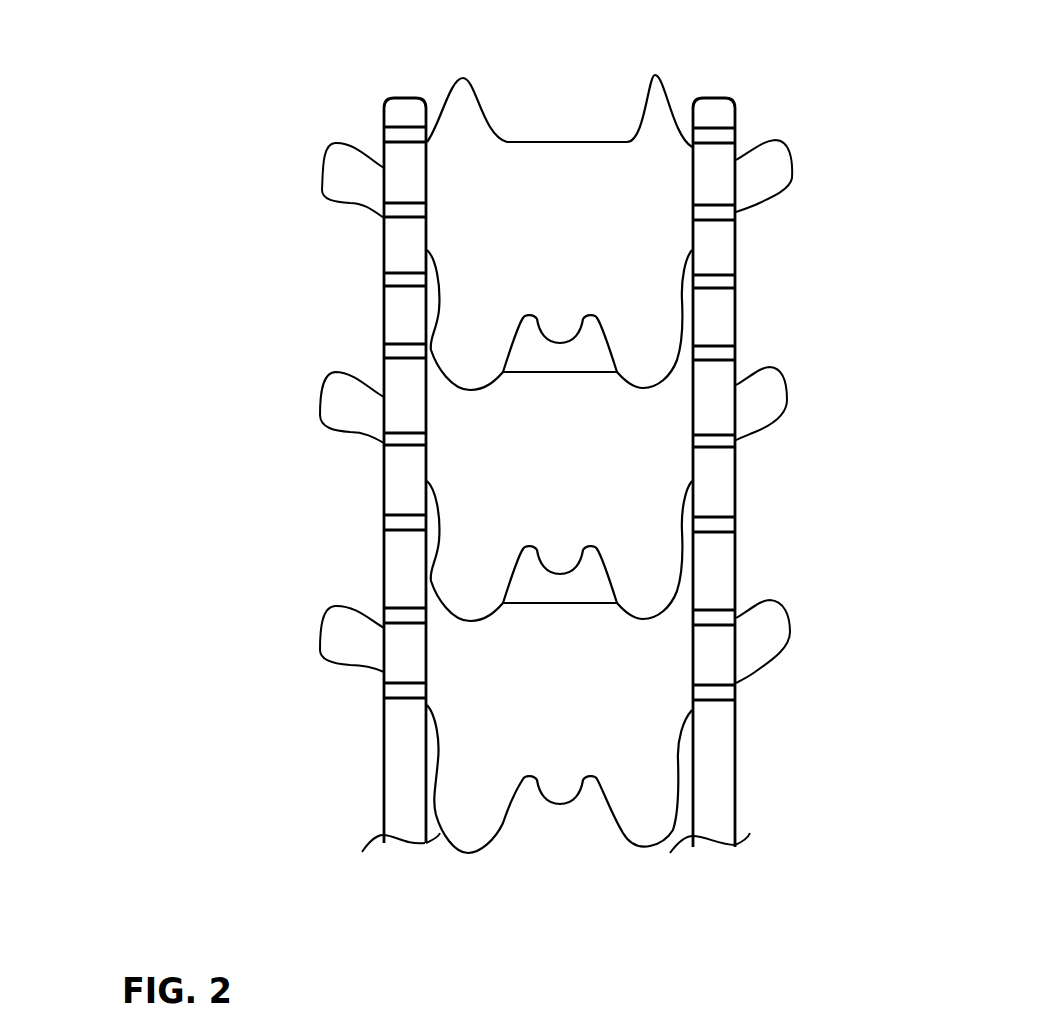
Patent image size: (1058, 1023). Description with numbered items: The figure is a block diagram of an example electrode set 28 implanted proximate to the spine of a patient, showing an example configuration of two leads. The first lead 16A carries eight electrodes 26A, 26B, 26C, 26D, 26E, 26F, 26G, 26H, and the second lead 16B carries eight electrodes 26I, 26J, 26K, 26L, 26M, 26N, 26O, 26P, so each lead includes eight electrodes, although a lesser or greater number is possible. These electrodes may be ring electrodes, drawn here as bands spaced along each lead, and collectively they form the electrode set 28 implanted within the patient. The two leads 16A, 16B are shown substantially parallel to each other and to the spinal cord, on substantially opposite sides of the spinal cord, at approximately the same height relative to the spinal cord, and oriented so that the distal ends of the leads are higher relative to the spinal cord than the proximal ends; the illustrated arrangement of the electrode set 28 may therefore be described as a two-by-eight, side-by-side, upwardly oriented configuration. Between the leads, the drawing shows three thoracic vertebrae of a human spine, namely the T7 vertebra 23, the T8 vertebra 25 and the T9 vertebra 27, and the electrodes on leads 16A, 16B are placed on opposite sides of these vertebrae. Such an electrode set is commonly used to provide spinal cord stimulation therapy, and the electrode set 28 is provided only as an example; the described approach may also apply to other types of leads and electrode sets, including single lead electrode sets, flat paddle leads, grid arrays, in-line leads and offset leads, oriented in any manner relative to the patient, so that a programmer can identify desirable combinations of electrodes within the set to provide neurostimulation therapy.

The electrode set 28 is at (170, 74).
The T7 vertebra 23 is at (465, 98).
The T8 vertebra 25 is at (335, 428).
The T9 vertebra 27 is at (640, 833).
The lead 16A is at (395, 768).
The lead 16B is at (733, 808).
The electrode 26A is at (395, 693).
The electrode 26B is at (395, 618).
The electrode 26C is at (395, 525).
The electrode 26D is at (403, 437).
The electrode 26E is at (395, 352).
The electrode 26F is at (395, 280).
The electrode 26G is at (395, 210).
The electrode 26H is at (395, 135).
The electrode 26I is at (725, 693).
The electrode 26J is at (725, 620).
The electrode 26K is at (725, 527).
The electrode 26L is at (725, 438).
The electrode 26M is at (725, 355).
The electrode 26N is at (725, 283).
The electrode 26O is at (725, 213).
The electrode 26P is at (725, 137).